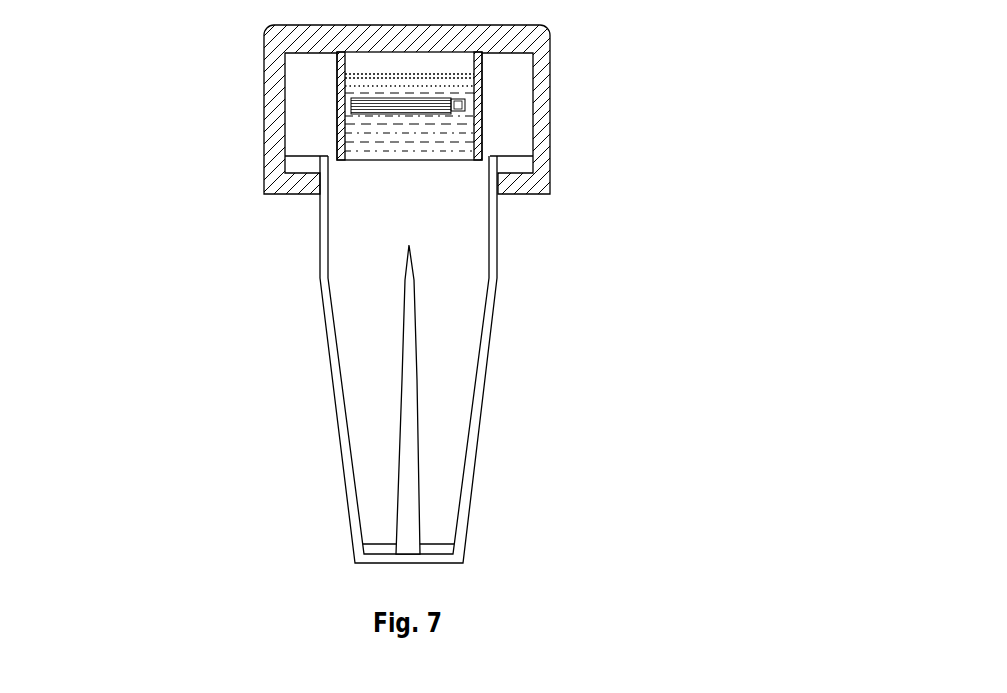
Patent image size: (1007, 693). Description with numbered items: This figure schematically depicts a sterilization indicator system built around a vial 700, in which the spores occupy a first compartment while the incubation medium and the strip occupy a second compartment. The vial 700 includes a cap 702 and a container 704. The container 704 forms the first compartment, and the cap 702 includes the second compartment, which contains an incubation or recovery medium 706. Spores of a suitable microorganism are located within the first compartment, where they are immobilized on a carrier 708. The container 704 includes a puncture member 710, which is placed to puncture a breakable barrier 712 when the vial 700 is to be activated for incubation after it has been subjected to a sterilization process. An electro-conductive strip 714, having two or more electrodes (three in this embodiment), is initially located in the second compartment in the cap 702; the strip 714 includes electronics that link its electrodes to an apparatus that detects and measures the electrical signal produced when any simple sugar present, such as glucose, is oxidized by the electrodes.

The vial 700 is at (362, 289).
The cap 702 is at (550, 100).
The container 704 is at (487, 334).
The incubation or recovery medium 706 is at (453, 78).
The carrier 708 is at (435, 548).
The puncture member 710 is at (407, 459).
The breakable barrier 712 is at (443, 160).
The electro-conductive strip 714 is at (435, 107).